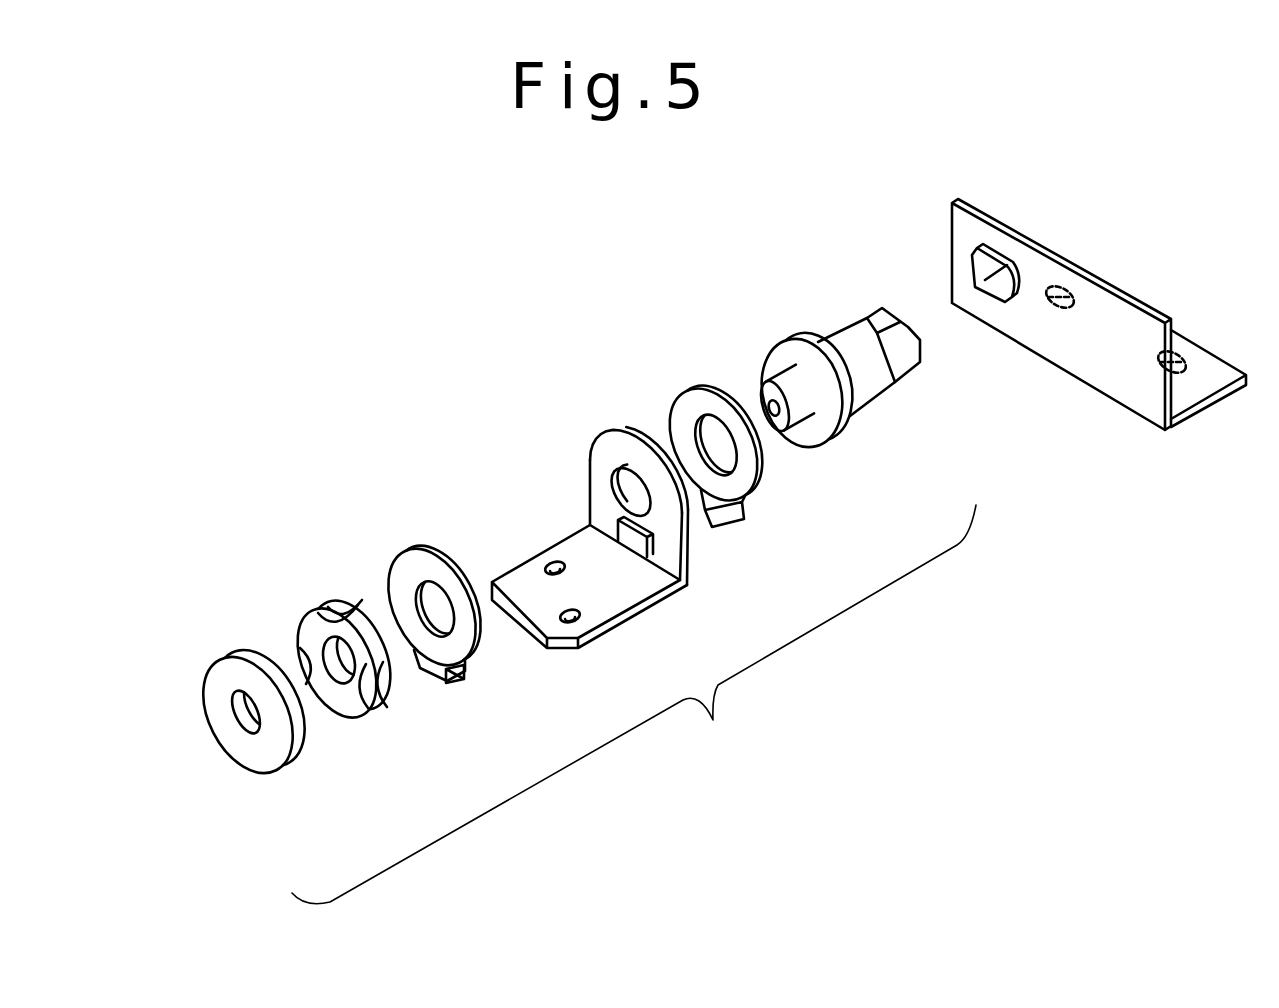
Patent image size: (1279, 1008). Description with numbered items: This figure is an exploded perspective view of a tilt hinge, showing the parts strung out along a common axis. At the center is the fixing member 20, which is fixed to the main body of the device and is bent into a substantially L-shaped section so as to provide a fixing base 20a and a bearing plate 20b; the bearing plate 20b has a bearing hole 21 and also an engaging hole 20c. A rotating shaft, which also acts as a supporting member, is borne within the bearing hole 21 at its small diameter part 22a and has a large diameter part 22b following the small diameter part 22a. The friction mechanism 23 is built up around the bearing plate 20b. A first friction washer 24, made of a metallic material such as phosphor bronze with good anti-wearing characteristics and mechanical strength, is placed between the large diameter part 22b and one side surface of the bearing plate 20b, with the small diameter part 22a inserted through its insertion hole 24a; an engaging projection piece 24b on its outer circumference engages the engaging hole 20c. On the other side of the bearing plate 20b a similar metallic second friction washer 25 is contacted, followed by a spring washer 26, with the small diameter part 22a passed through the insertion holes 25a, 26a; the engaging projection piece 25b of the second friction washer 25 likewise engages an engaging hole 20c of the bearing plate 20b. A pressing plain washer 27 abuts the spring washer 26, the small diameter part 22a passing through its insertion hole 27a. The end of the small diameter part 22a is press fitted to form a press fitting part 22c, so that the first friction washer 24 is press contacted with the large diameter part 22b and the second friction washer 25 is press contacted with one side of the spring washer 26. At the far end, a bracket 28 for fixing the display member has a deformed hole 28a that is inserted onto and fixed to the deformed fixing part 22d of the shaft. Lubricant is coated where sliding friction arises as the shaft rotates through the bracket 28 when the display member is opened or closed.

The fixing member 20 is at (571, 529).
The fixing base 20a is at (602, 610).
The bearing plate 20b is at (582, 468).
The engaging hole 20c is at (590, 523).
The bearing hole 21 is at (617, 492).
The small diameter part 22a is at (744, 332).
The large diameter part 22b is at (831, 328).
The press fitting part 22c is at (763, 402).
The deformed fixing part 22d is at (908, 365).
The friction mechanism 23 is at (747, 763).
The first friction washer 24 is at (721, 458).
The insertion hole 24a is at (697, 425).
The engaging projection piece 24b is at (730, 523).
The second friction washer 25 is at (417, 595).
The insertion hole 25a is at (415, 598).
The engaging projection piece 25b is at (462, 680).
The spring washer 26 is at (342, 662).
The insertion hole 26a is at (343, 682).
The pressing plain washer 27 is at (265, 750).
The insertion hole 27a is at (250, 735).
The bracket 28 is at (1058, 287).
The deformed hole 28a is at (980, 265).